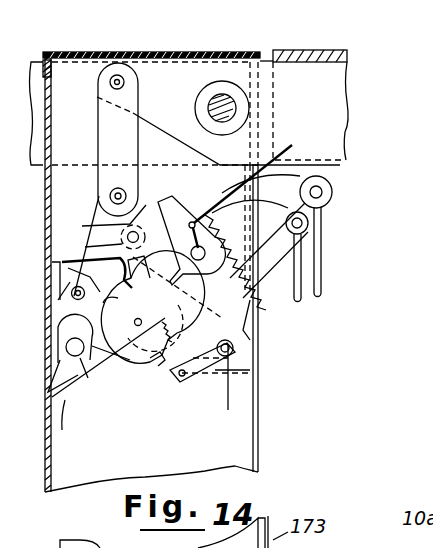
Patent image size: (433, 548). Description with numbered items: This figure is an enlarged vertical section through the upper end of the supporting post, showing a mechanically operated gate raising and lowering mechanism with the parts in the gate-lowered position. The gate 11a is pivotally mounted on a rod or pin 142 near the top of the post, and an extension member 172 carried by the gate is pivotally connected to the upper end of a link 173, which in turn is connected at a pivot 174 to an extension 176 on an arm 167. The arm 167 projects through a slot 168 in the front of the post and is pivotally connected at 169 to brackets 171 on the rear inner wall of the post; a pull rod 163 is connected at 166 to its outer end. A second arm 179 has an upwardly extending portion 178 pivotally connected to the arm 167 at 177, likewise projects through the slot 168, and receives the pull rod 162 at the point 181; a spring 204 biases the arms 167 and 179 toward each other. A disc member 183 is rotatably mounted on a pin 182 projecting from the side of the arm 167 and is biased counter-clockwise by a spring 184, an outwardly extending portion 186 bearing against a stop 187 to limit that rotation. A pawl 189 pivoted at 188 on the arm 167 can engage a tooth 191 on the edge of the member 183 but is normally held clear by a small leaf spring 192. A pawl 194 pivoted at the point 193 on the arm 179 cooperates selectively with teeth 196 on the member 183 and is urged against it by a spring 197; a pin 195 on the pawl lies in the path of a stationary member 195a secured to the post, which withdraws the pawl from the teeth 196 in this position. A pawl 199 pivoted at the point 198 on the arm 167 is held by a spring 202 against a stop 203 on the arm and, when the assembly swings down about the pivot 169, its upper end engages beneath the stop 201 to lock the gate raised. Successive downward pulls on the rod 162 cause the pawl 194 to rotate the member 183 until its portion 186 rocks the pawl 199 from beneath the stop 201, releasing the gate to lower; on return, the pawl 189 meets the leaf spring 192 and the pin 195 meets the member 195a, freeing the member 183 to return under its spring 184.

The gate 11a is at (355, 58).
The rod or pin 142 is at (224, 98).
The pull rod 162 is at (298, 262).
The pull rod 163 is at (315, 273).
The pivotal connection 166 is at (318, 192).
The arm 167 is at (288, 175).
The slot 168 is at (253, 322).
The pivot 169 is at (84, 371).
The brackets 171 is at (71, 406).
The extension member 172 is at (163, 80).
The link 173 is at (100, 118).
The pivot 174 is at (127, 192).
The extension 176 is at (97, 205).
The pivot 177 is at (92, 223).
The upwardly extending portion 178 is at (127, 238).
The second arm 179 is at (276, 289).
The connection point 181 is at (306, 222).
The pin 182 is at (155, 300).
The disc member 183 is at (110, 350).
The spring 184 is at (165, 334).
The outwardly extending portion 186 is at (140, 244).
The stop 187 is at (73, 268).
The pivot 188 is at (58, 293).
The pawl 189 is at (56, 268).
The tooth 191 is at (98, 310).
The leaf spring 192 is at (65, 323).
The pivot point 193 is at (230, 389).
The pawl 194 is at (173, 380).
The pin 195 is at (186, 378).
The stationary member 195a is at (235, 370).
The teeth 196 is at (153, 367).
The spring 197 is at (200, 342).
The pivot point 198 is at (243, 184).
The pawl 199 is at (180, 202).
The stop 201 is at (233, 352).
The spring 202 is at (258, 283).
The stop 203 is at (192, 222).
The spring 204 is at (250, 218).